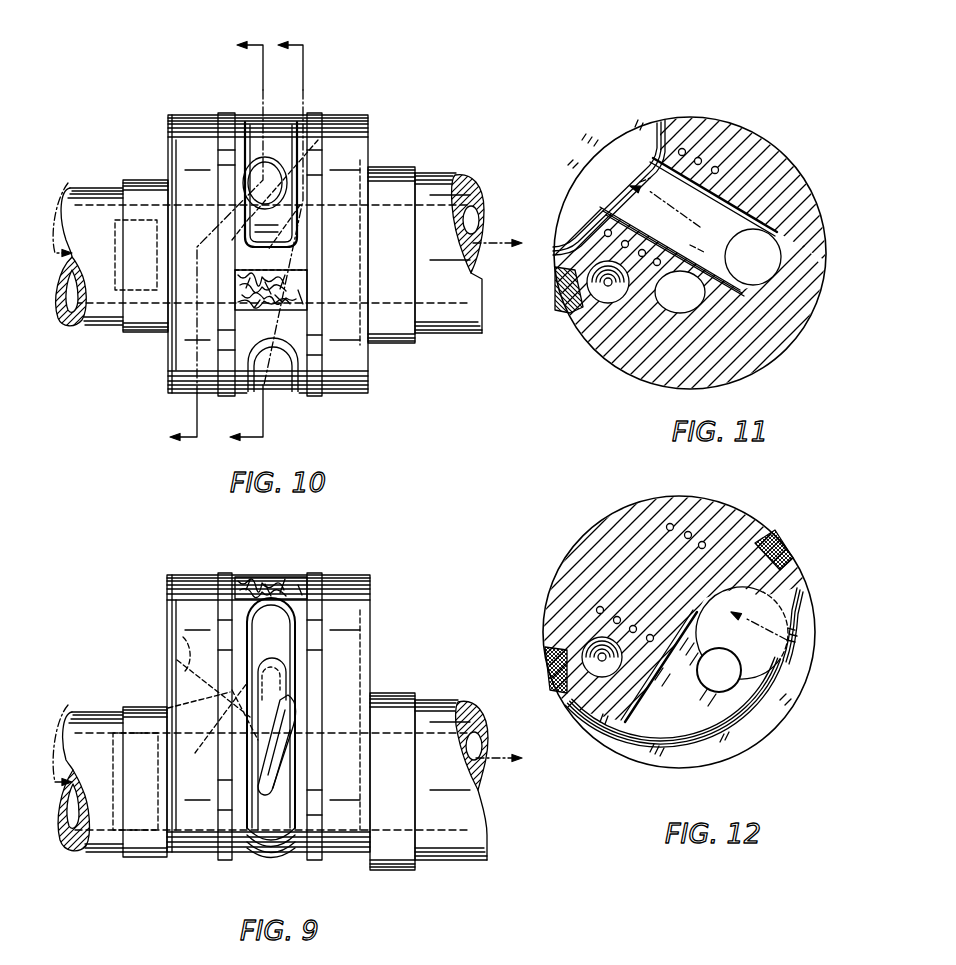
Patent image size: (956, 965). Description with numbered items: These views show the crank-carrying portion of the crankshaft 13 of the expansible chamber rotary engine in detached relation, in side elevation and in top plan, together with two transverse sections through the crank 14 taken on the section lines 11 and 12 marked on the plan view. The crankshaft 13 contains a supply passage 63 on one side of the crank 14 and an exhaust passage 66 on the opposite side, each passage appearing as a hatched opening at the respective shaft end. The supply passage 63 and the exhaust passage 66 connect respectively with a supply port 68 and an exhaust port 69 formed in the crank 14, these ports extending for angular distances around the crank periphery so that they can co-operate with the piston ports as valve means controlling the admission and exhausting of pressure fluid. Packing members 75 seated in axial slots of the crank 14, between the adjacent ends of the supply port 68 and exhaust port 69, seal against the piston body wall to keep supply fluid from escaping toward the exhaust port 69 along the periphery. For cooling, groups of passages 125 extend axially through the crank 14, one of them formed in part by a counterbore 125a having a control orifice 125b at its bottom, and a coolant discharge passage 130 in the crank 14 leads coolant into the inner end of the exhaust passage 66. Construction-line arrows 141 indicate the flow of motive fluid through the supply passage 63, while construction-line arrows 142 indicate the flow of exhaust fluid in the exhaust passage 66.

In FIG. 10, the crankshaft 13 is at (441, 173).
In FIG. 9, the crankshaft 13 is at (428, 764).
In FIG. 10, the crank 14 is at (272, 241).
In FIG. 9, the crank 14 is at (272, 702).
In FIG. 11, the crank 14 is at (695, 244).
In FIG. 12, the crank 14 is at (685, 620).
In FIG. 10, the supply passage 63 is at (77, 272).
In FIG. 9, the supply passage 63 is at (78, 800).
In FIG. 11, the supply passage 63 is at (770, 272).
In FIG. 10, the exhaust passage 66 is at (468, 232).
In FIG. 9, the exhaust passage 66 is at (480, 772).
In FIG. 12, the exhaust passage 66 is at (758, 668).
In FIG. 10, the supply port 68 is at (247, 124).
In FIG. 11, the supply port 68 is at (602, 160).
In FIG. 10, the exhaust port 69 is at (283, 375).
In FIG. 9, the exhaust port 69 is at (277, 853).
In FIG. 12, the exhaust port 69 is at (740, 742).
In FIG. 10, the packing members 75 is at (306, 281).
In FIG. 9, the packing members 75 is at (267, 580).
In FIG. 12, the packing members 75 is at (781, 548).
In FIG. 11, the passages 125 is at (720, 169).
In FIG. 12, the passages 125 is at (690, 532).
In FIG. 11, the counterbore 125a is at (612, 301).
In FIG. 12, the counterbore 125a is at (613, 669).
In FIG. 11, the control orifice 125b is at (607, 287).
In FIG. 12, the control orifice 125b is at (596, 656).
In FIG. 9, the coolant discharge passage 130 is at (168, 642).
In FIG. 11, the coolant discharge passage 130 is at (680, 306).
In FIG. 12, the coolant discharge passage 130 is at (722, 683).
In FIG. 10, the construction-line arrows 141 is at (71, 209).
In FIG. 9, the construction-line arrows 141 is at (71, 735).
In FIG. 11, the construction-line arrows 141 is at (676, 216).
In FIG. 10, the construction-line arrows 142 is at (494, 250).
In FIG. 9, the construction-line arrows 142 is at (494, 758).
In FIG. 12, the construction-line arrows 142 is at (742, 633).
In FIG. 10, the section line 11— 11 is at (204, 242).
In FIG. 10, the section line 12— 12 is at (283, 242).